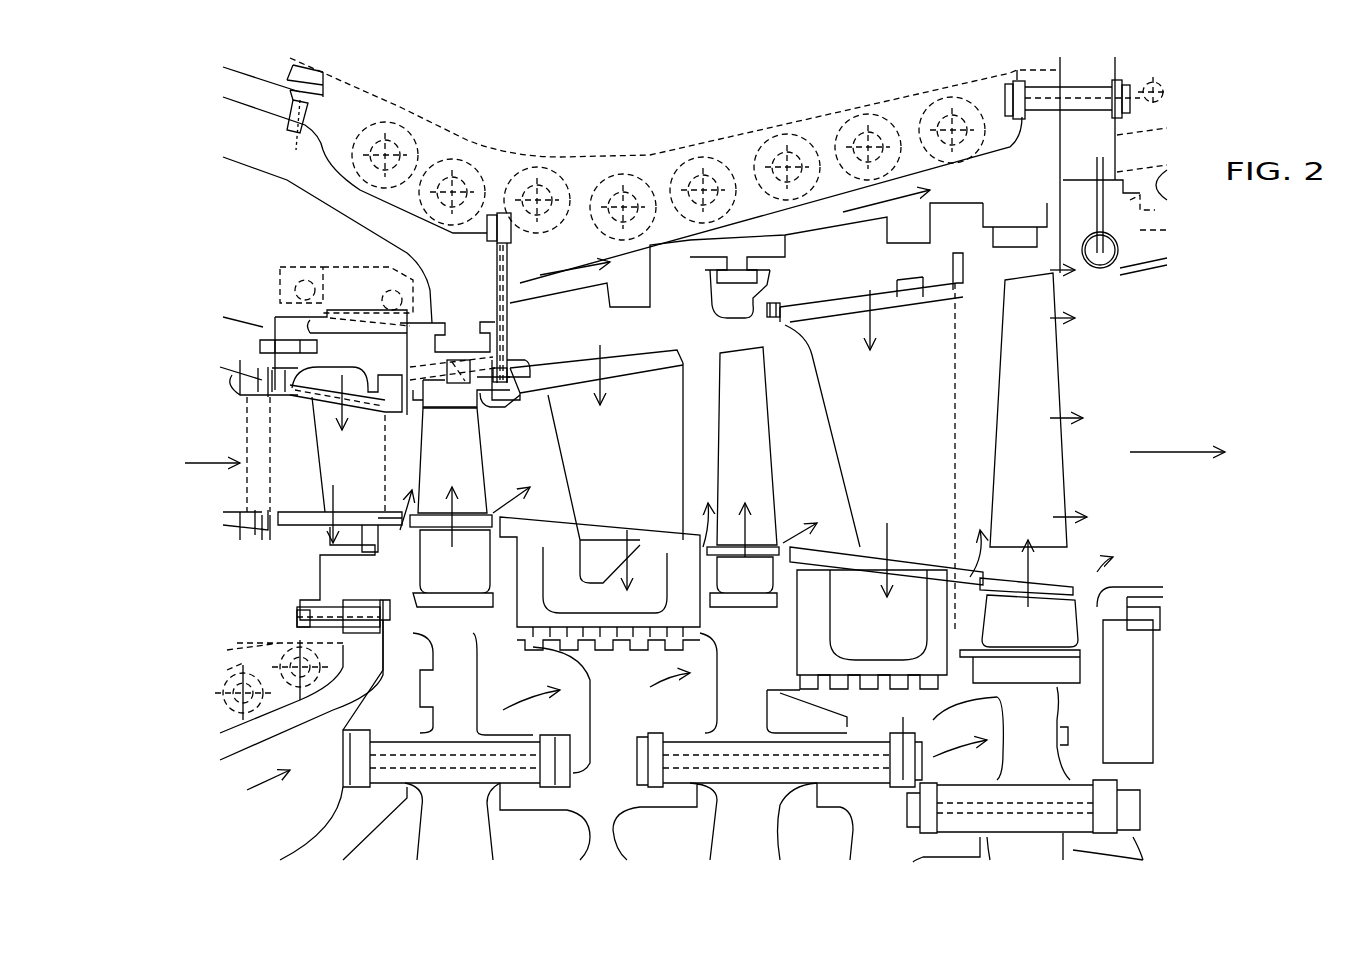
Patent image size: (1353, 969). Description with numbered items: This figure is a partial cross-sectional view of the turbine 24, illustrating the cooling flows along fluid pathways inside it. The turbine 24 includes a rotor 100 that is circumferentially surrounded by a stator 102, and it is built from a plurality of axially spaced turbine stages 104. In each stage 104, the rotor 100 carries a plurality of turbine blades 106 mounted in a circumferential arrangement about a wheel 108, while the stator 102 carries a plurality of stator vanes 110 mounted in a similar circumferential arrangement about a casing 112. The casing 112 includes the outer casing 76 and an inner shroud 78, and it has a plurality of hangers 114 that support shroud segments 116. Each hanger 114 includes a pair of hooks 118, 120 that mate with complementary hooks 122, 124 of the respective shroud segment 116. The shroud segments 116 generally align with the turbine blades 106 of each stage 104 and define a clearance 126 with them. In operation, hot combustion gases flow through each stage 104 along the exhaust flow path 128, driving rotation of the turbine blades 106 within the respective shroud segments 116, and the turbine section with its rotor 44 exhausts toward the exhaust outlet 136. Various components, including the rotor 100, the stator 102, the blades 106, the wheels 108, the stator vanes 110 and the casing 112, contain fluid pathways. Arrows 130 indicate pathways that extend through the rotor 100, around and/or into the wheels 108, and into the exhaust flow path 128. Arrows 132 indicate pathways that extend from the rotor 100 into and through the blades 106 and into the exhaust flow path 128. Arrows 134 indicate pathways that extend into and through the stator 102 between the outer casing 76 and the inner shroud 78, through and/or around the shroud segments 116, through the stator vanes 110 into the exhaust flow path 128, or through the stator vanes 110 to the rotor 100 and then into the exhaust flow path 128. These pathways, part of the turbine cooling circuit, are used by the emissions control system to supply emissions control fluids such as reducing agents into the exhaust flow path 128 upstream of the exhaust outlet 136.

The turbine 24 is at (640, 110).
The turbine rotor 44 is at (1033, 842).
The outer casing 76 is at (280, 182).
The inner shroud 78 is at (230, 353).
The rotor 100 is at (200, 722).
The stator 102 is at (230, 287).
The turbine stage 104 is at (448, 833).
The turbine blade 106 is at (437, 474).
The wheel 108 is at (437, 716).
The stator vane 110 is at (337, 461).
The casing 112 is at (270, 262).
The hanger 114 is at (447, 323).
The shroud segment 116 is at (977, 237).
The hook 118 is at (420, 347).
The hook 120 is at (513, 348).
The hook 122 is at (432, 285).
The hook 124 is at (492, 313).
The clearance 126 is at (423, 410).
The exhaust flow path 128 is at (207, 463).
The arrows 130 is at (500, 513).
The arrows 132 is at (1057, 307).
The arrows 134 is at (297, 270).
The exhaust outlet 136 is at (1130, 273).